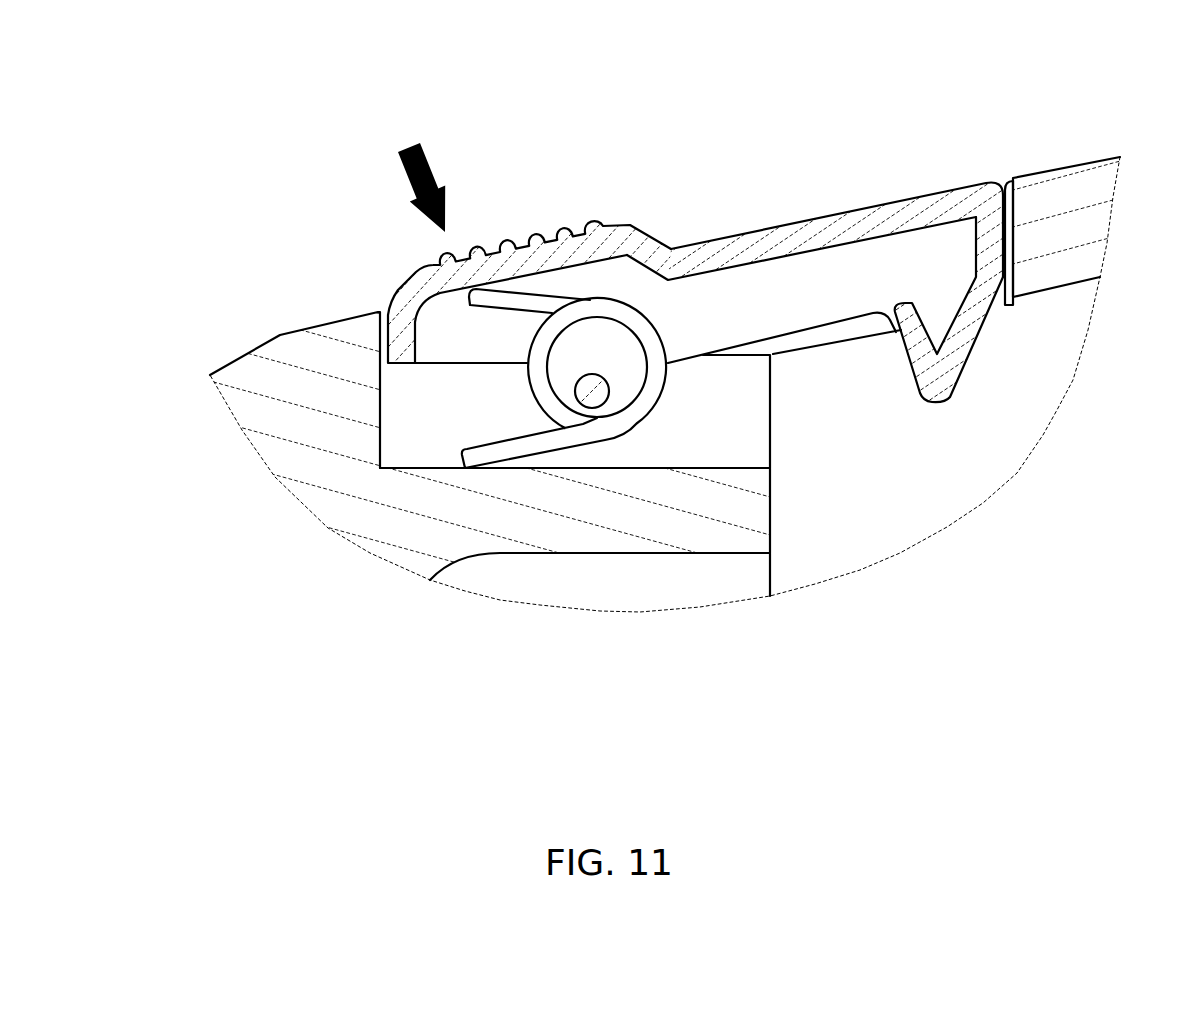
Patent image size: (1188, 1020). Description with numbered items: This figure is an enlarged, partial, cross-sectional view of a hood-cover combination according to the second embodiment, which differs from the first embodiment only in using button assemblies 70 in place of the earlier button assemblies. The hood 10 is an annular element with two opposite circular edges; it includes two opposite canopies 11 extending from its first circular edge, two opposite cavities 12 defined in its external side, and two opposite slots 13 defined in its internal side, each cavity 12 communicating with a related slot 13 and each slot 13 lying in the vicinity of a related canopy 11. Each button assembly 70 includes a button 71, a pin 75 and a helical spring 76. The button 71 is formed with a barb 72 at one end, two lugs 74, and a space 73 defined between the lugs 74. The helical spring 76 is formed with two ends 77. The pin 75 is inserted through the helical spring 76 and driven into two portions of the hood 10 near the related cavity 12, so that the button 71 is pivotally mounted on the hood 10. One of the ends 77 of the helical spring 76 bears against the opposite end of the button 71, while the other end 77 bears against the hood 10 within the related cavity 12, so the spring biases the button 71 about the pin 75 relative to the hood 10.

The hood 10 is at (302, 350).
The canopy 11 is at (1060, 190).
The cavity 12 is at (725, 467).
The slot 13 is at (1007, 197).
The button assembly 70 is at (745, 104).
The button 71 is at (747, 250).
The barb 72 is at (950, 360).
The space 73 is at (800, 257).
The lug 74 is at (517, 390).
The pin 75 is at (592, 390).
The helical spring 76 is at (647, 333).
The end 77 is at (552, 438).